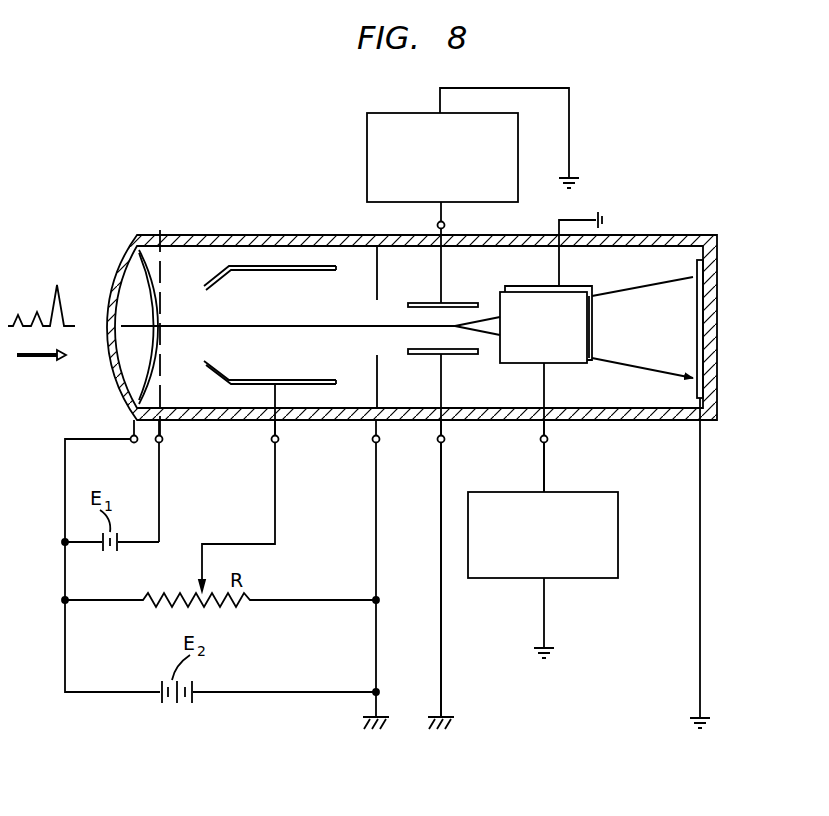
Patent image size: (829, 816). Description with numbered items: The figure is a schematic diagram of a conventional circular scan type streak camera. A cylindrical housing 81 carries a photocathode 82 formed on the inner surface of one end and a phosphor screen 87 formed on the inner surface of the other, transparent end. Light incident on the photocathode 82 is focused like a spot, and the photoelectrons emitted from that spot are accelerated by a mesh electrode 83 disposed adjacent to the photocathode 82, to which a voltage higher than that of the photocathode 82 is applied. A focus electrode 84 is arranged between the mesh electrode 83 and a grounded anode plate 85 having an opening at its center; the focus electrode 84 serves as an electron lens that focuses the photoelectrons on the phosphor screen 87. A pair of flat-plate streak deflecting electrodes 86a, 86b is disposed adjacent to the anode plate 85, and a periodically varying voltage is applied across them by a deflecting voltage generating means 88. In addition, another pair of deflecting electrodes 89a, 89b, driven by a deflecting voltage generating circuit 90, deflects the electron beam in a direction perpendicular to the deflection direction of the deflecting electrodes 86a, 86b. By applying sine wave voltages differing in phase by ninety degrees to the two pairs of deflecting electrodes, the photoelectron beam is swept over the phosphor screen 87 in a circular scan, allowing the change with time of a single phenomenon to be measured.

The cylindrical housing 81 is at (237, 235).
The photocathode 82 is at (130, 283).
The mesh electrode 83 is at (162, 284).
The focus electrode 84 is at (302, 266).
The anode plate 85 is at (376, 285).
The deflecting electrode 86a is at (425, 303).
The deflecting electrode 86b is at (468, 355).
The phosphor screen 87 is at (698, 262).
The deflecting voltage generating means 88 is at (518, 145).
The deflecting electrode 89a is at (576, 363).
The deflecting electrode 89b is at (592, 286).
The deflecting voltage generating circuit 90 is at (618, 518).